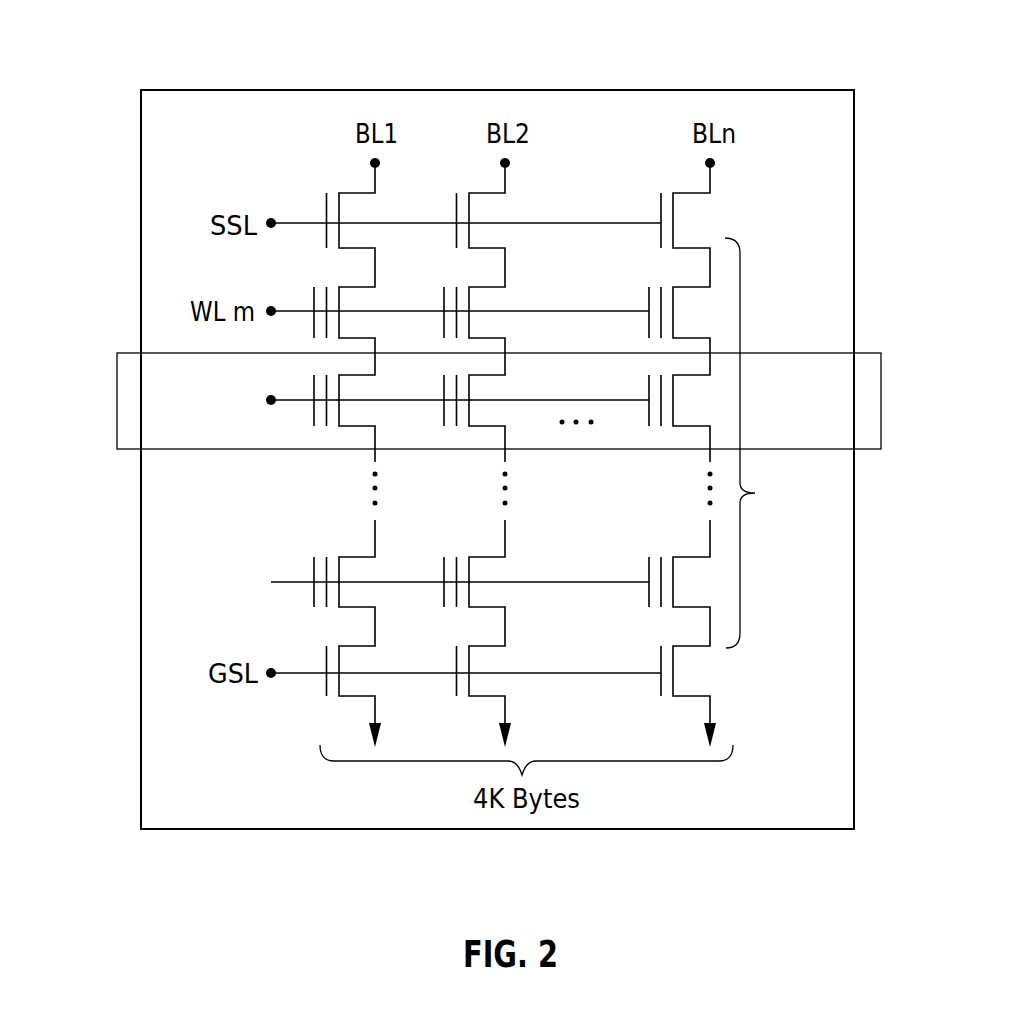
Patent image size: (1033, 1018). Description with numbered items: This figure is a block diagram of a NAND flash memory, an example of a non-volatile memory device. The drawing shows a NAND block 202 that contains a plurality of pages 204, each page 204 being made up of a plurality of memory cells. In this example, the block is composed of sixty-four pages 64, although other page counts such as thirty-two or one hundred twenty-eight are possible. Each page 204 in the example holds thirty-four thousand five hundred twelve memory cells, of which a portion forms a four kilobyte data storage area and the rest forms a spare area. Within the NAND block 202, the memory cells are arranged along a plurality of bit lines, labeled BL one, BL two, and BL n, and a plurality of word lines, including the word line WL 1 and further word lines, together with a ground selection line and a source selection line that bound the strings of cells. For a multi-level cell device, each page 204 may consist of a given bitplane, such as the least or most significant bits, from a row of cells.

The NAND block 202 is at (608, 89).
The page 204 is at (829, 410).
The 64 pages brace 64 is at (781, 443).
The word line WL 1 is at (423, 583).